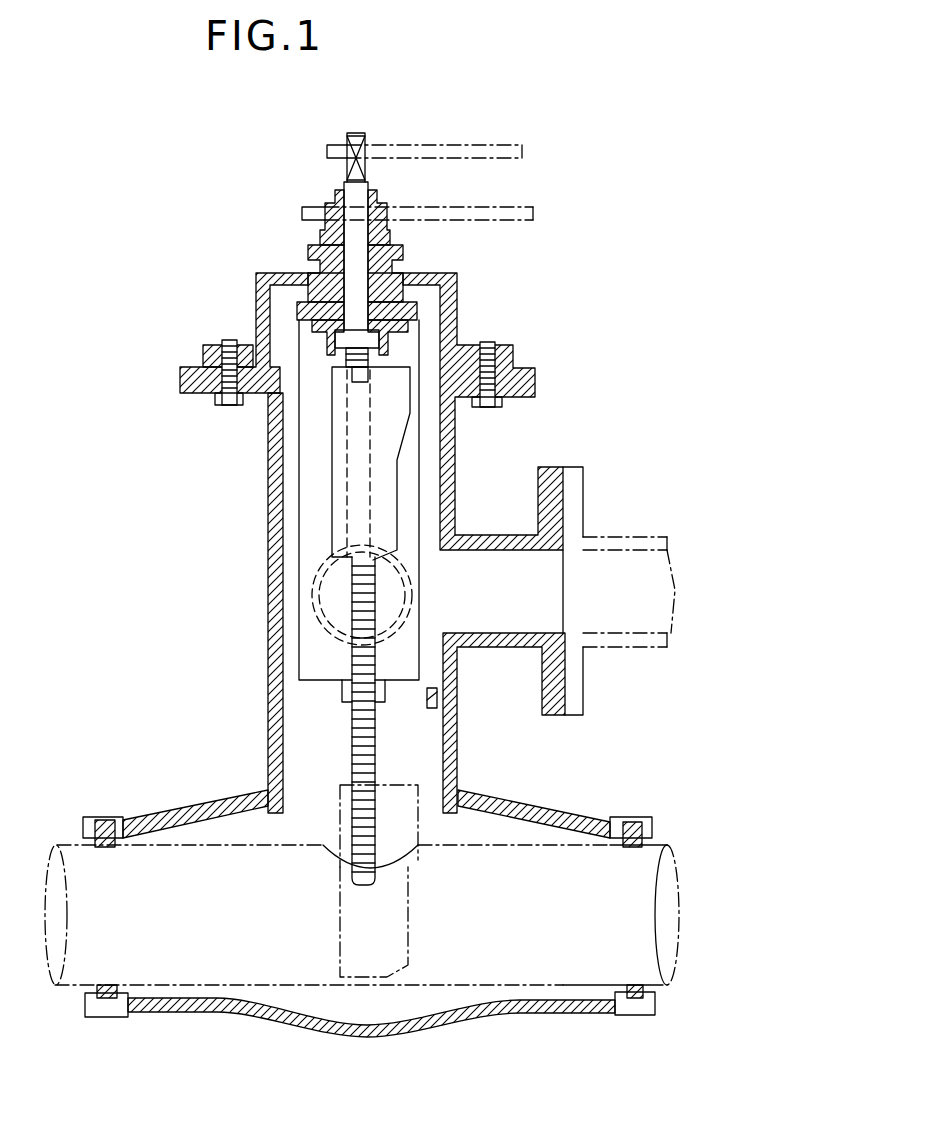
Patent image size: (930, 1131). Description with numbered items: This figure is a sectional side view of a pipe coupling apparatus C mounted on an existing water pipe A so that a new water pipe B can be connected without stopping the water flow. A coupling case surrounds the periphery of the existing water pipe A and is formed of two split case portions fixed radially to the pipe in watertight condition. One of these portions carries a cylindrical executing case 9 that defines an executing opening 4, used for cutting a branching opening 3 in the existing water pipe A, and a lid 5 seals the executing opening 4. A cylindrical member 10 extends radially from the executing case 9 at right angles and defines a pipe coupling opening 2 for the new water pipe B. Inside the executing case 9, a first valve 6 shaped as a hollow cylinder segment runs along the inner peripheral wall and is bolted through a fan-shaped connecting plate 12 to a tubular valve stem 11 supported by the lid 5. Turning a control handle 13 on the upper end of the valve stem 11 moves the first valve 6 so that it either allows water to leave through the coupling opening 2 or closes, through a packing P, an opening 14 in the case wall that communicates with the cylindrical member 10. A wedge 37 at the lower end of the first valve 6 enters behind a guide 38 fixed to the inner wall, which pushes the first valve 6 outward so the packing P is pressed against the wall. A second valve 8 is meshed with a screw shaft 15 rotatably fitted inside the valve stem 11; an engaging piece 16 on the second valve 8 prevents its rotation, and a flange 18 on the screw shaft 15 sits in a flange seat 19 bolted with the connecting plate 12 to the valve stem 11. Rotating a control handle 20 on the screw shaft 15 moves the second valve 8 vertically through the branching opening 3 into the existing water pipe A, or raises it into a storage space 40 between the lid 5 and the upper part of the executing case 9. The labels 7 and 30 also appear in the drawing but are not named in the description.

The pipe coupling opening 2 is at (566, 594).
The branching opening 3 is at (392, 846).
The executing opening 4 is at (283, 366).
The lid 5 is at (443, 270).
The first valve 6 is at (317, 643).
The main pipe 7 is at (640, 912).
The second valve 8 is at (390, 472).
The executing case 9 is at (268, 540).
The cylindrical member 10 is at (495, 648).
The valve stem 11 is at (340, 193).
The connecting plate 12 is at (290, 362).
The control handle 13 is at (523, 208).
The opening 14 is at (447, 597).
The screw shaft 15 is at (350, 730).
The engaging piece 16 is at (352, 372).
The flange 18 is at (350, 338).
The flange seat 19 is at (397, 323).
The control handle 20 is at (508, 147).
The flange 30 is at (525, 383).
The wedge 37 is at (345, 692).
The guide 38 is at (435, 710).
The storage space 40 is at (425, 382).
The existing water pipe A is at (70, 832).
The new water pipe B is at (653, 540).
The pipe coupling apparatus C is at (187, 262).
The packing P is at (315, 590).